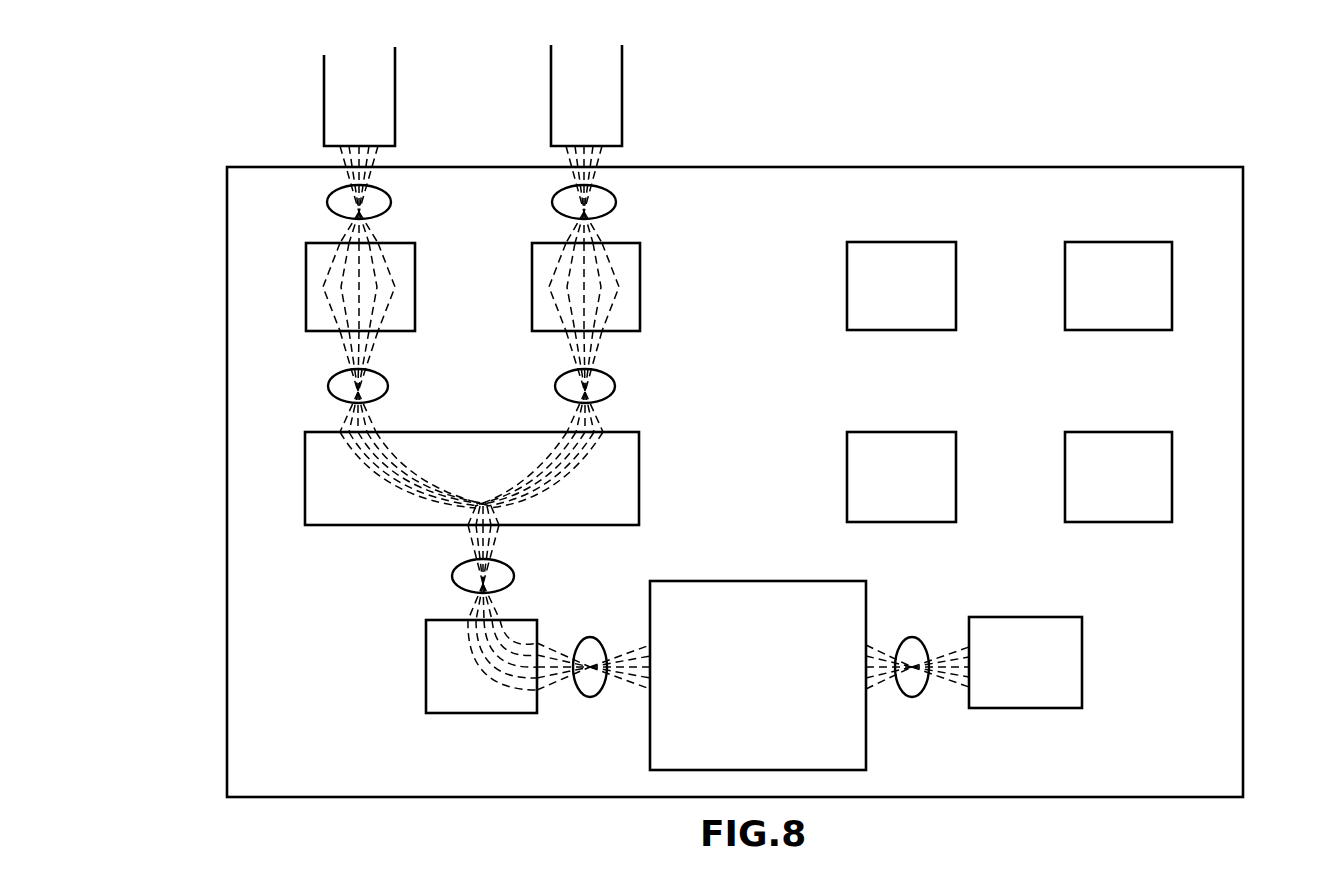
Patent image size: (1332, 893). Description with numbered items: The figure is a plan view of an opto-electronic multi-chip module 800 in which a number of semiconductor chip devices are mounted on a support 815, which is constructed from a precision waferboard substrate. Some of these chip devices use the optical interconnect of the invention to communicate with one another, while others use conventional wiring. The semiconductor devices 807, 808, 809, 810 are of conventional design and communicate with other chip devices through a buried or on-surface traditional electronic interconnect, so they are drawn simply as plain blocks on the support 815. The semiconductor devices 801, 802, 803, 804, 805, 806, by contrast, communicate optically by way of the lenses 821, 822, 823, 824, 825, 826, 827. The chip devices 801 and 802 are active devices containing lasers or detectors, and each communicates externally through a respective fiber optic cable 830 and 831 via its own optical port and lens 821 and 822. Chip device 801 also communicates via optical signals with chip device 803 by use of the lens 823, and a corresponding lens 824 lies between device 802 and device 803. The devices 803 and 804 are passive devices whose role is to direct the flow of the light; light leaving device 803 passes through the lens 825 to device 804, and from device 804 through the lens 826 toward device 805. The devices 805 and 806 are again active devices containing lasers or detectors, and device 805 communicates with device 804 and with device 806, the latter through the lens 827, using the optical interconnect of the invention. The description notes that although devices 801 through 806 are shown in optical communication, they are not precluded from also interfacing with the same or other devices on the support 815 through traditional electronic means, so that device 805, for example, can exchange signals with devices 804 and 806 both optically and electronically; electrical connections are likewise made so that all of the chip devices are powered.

The optical system 800 is at (91, 124).
The support 815 is at (1243, 688).
The fiber optic cable 830 is at (395, 108).
The fiber optic cable 831 is at (622, 108).
The lens 821 is at (388, 210).
The lens 822 is at (613, 210).
The semiconductor device 801 is at (415, 268).
The semiconductor device 802 is at (640, 268).
The lens 823 is at (386, 392).
The lens 824 is at (612, 392).
The semiconductor device 803 is at (639, 462).
The lens 825 is at (512, 582).
The semiconductor device 804 is at (426, 648).
The lens 826 is at (604, 628).
The semiconductor device 805 is at (776, 581).
The lens 827 is at (928, 628).
The semiconductor device 806 is at (1082, 652).
The semiconductor device 807 is at (956, 468).
The semiconductor device 808 is at (1172, 468).
The semiconductor device 809 is at (956, 272).
The semiconductor device 810 is at (1172, 272).